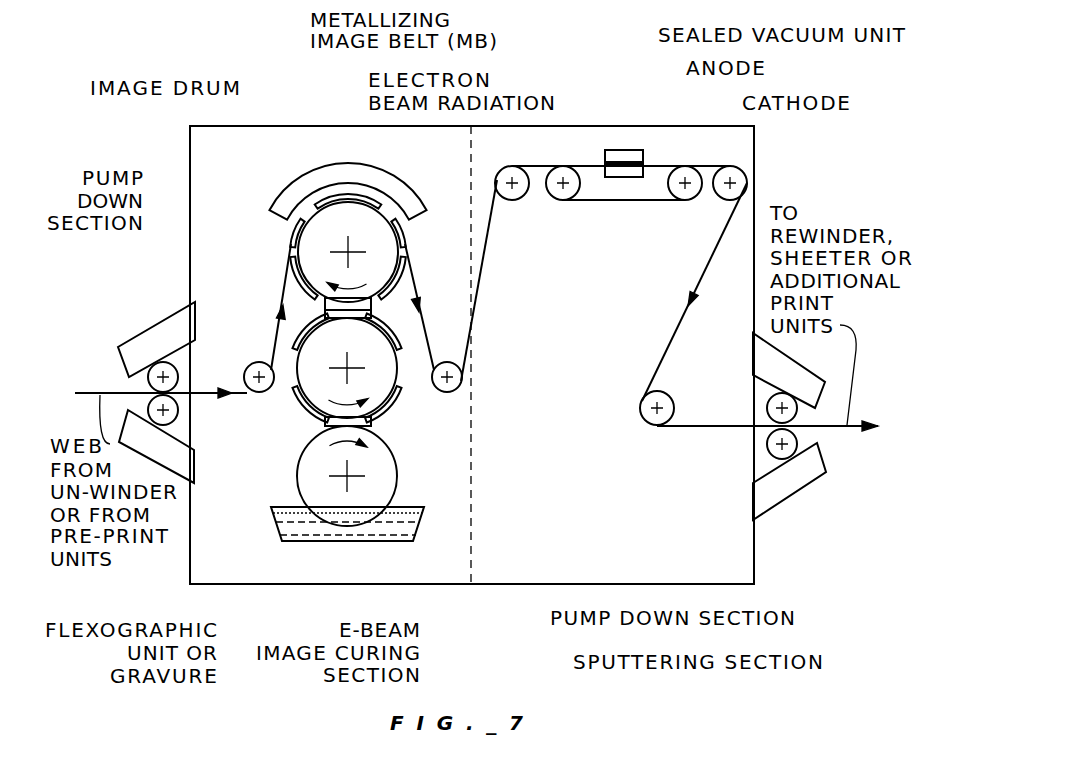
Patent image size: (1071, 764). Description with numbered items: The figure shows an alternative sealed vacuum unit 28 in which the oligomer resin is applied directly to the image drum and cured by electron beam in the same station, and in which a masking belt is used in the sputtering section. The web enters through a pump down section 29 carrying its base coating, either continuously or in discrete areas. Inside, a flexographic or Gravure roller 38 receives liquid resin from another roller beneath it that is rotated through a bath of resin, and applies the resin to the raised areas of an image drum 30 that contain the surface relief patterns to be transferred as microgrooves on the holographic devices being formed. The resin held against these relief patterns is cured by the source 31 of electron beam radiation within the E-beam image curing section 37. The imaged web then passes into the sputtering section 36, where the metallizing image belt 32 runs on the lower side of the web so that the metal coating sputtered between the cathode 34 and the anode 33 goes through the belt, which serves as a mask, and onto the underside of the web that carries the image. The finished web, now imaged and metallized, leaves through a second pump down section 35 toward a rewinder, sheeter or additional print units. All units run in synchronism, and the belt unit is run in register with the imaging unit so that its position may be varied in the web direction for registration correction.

The sealed vacuum unit 28 is at (602, 126).
The pump down section 29 is at (165, 333).
The image drum 30 is at (305, 243).
The source of electron beam radiation 31 is at (305, 185).
The metallizing image belt 32 is at (588, 200).
The anode 33 is at (623, 150).
The cathode 34 is at (645, 172).
The pump down section 35 is at (793, 475).
The sputtering section 36 is at (500, 570).
The E-beam image curing section 37 is at (460, 570).
The flexographic or Gravure roller 38 is at (313, 426).